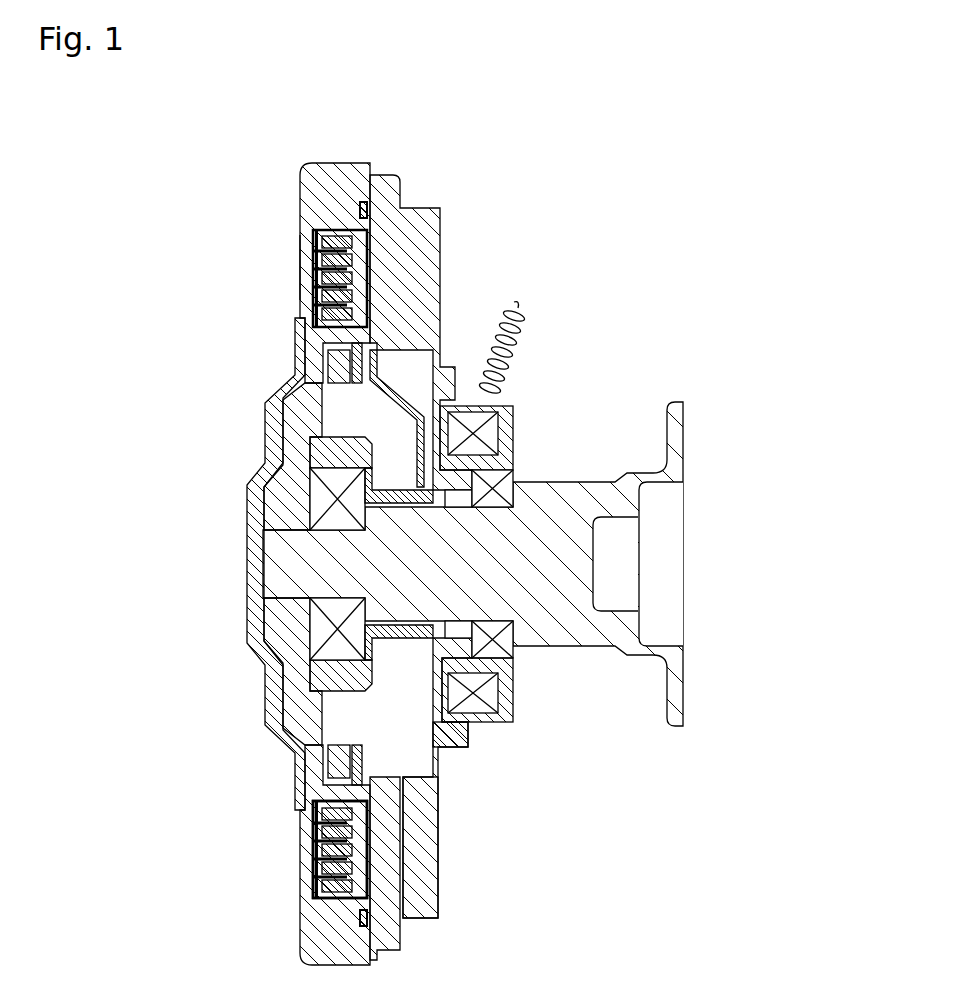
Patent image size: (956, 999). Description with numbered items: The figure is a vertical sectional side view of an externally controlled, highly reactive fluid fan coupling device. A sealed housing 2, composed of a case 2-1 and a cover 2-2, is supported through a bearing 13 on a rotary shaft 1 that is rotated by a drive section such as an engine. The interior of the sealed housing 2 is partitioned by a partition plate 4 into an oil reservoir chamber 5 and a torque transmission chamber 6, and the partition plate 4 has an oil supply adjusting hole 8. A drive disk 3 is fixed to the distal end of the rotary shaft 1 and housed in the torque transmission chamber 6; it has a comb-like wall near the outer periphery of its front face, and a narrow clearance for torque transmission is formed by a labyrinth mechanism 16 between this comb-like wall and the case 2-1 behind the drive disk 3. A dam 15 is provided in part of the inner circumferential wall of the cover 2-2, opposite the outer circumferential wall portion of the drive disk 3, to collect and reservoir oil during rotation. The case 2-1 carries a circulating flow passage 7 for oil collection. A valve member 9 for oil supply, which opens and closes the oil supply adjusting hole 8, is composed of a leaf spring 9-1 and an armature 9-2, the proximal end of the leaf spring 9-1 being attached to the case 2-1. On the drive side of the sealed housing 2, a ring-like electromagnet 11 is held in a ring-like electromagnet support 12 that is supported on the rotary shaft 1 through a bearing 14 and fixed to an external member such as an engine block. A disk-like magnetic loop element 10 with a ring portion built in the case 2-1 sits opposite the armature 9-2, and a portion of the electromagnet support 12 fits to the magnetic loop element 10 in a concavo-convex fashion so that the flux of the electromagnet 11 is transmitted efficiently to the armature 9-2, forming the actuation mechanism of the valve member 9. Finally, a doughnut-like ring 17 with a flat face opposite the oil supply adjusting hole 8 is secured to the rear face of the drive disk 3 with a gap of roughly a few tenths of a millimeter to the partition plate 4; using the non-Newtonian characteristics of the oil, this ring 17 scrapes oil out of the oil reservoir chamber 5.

The rotary shaft 1 is at (280, 572).
The sealed housing 2 is at (362, 529).
The case 2-1 is at (418, 232).
The cover 2-2 is at (313, 207).
The drive disk 3 is at (357, 277).
The partition plate 4 is at (288, 402).
The oil reservoir chamber 5 is at (340, 428).
The torque transmission chamber 6 is at (367, 830).
The circulating flow passage 7 is at (403, 807).
The oil supply adjusting hole 8 is at (353, 350).
The valve member 9 is at (405, 378).
The leaf spring 9-1 is at (395, 402).
The armature 9-2 is at (430, 443).
The magnetic loop element 10 is at (463, 737).
The electromagnet 11 is at (490, 697).
The electromagnet support 12 is at (505, 682).
The bearing 13 is at (320, 492).
The bearing 14 is at (505, 642).
The dam 15 is at (327, 890).
The labyrinth mechanism 16 is at (296, 264).
The ring 17 is at (333, 367).